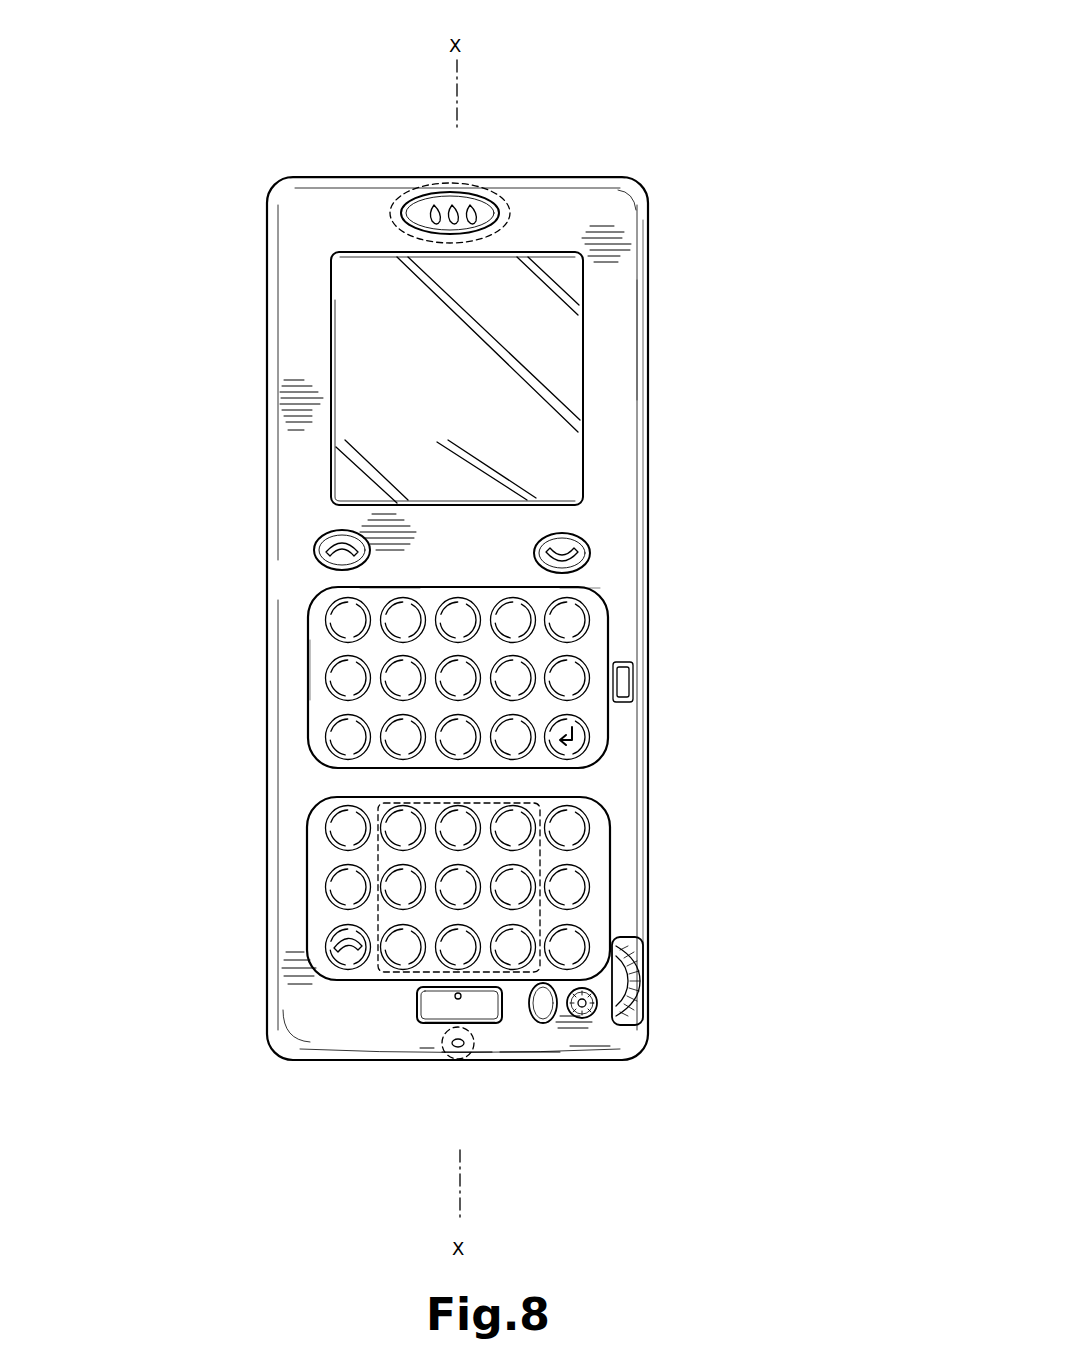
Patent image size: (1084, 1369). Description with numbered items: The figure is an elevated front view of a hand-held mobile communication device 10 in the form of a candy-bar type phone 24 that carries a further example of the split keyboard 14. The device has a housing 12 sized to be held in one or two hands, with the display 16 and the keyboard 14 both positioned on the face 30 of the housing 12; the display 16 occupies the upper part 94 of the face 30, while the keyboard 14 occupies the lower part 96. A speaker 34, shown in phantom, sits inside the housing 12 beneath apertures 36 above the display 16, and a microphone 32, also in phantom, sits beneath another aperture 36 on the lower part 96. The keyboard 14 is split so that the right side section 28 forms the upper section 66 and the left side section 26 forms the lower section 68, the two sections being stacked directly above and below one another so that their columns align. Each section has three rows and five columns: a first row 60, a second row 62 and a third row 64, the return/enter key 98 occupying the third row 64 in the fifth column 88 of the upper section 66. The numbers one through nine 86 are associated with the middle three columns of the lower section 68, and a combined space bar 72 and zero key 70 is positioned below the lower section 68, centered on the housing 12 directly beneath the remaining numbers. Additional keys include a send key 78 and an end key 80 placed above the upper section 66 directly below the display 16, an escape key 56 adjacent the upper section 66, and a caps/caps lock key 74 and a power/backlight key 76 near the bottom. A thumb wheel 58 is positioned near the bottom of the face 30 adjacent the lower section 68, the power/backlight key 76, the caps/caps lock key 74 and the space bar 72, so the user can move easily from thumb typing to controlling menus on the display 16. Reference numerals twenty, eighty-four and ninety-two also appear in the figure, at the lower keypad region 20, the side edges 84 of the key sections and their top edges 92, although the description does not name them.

The mobile communication device 10 is at (714, 90).
The housing 12 is at (654, 502).
The keyboard 14 is at (616, 800).
The display 16 is at (552, 348).
The lower keypad section 20 is at (352, 962).
The candy-bar type phone 24 is at (662, 214).
The left side section 26 is at (326, 920).
The right side section 28 is at (335, 752).
The face 30 is at (297, 850).
The microphone 32 is at (462, 1058).
The speaker 34 is at (488, 180).
The aperture 36 is at (448, 204).
The escape key 56 is at (630, 672).
The thumb wheel 58 is at (636, 988).
The first row 60 is at (332, 630).
The second row 62 is at (330, 680).
The third row 64 is at (332, 738).
The upper section 66 is at (616, 595).
The lower section 68 is at (355, 995).
The "0" key 70 is at (420, 1030).
The space bar 72 is at (497, 1020).
The caps/caps lock key 74 is at (560, 1025).
The power/backlight key 76 is at (588, 1022).
The send key 78 is at (316, 547).
The end key 80 is at (585, 533).
The left side edge of keypad 84 is at (314, 622).
The numbers "1-9" 86 is at (432, 802).
The fifth column 88 is at (572, 588).
The top edge of keypad 92 is at (335, 588).
The upper part 94 is at (630, 341).
The lower part 96 is at (640, 802).
The return/enter key 98 is at (583, 732).